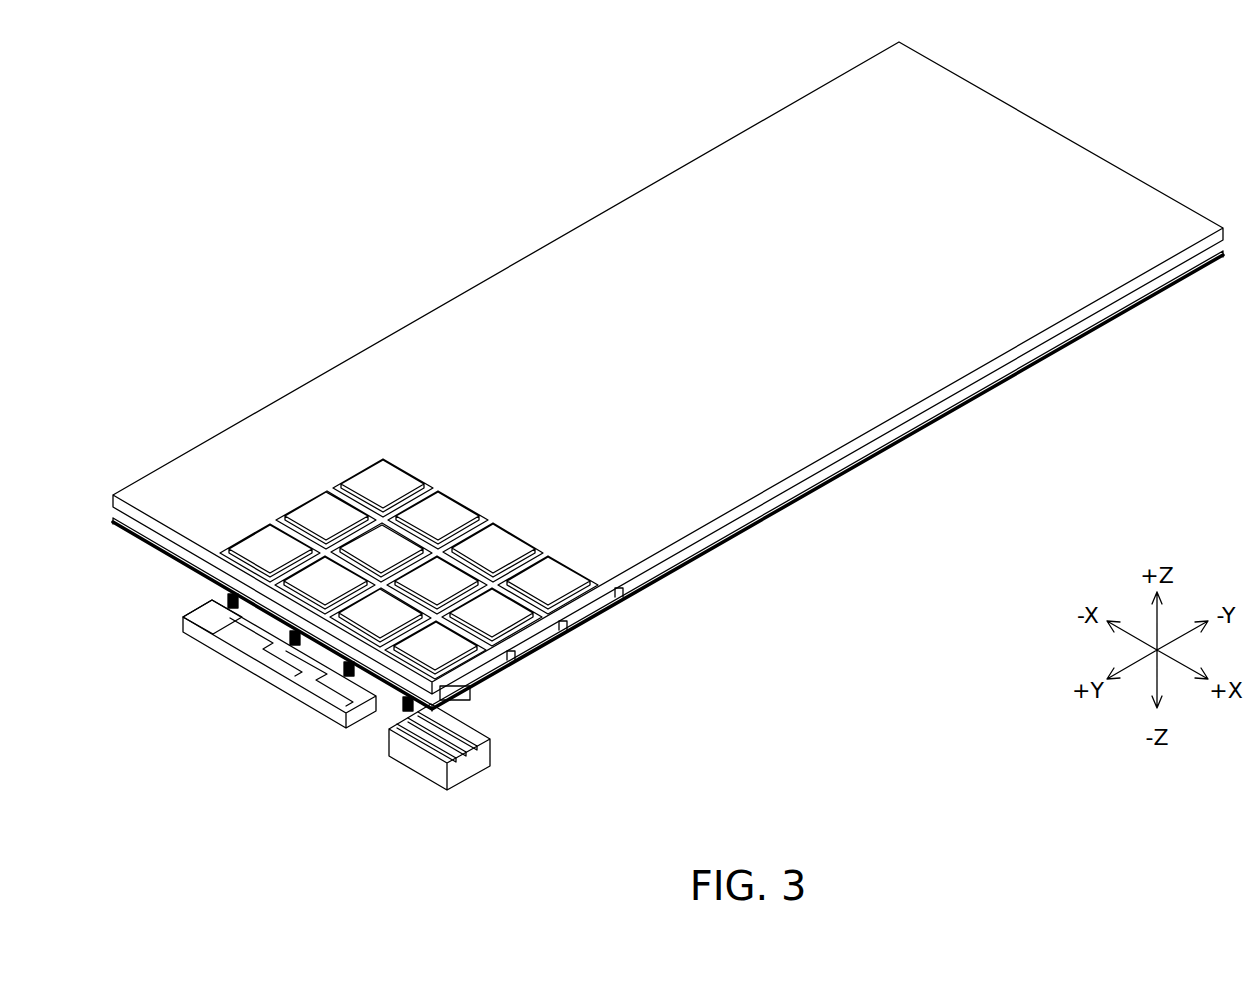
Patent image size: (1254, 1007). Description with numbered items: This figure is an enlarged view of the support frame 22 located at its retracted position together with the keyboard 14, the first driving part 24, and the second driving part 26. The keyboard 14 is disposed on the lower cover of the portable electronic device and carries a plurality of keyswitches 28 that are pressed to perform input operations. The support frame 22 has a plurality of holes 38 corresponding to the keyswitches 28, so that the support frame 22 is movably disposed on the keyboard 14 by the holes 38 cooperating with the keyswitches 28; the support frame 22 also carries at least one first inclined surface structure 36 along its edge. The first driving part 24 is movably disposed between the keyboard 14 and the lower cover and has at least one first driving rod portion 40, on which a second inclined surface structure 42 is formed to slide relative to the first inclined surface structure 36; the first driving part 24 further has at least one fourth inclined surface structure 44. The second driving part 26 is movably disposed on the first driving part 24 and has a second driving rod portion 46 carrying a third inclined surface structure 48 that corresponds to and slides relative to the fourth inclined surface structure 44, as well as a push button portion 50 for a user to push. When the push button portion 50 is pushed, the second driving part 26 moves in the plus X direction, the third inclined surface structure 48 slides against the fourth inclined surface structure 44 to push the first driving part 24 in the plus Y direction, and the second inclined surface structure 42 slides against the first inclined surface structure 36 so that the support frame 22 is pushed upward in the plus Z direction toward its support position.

The keyboard 14 is at (895, 462).
The support frame 22 is at (611, 185).
The first driving part 24 is at (228, 711).
The second driving part 26 is at (453, 794).
The keyswitches 28 is at (387, 526).
The first inclined surface structure 36 is at (515, 648).
The holes 38 is at (425, 462).
The first driving rod portion 40 is at (458, 692).
The second inclined surface structure 42 is at (545, 627).
The fourth inclined surface structure 44 is at (355, 710).
The second driving rod portion 46 is at (215, 608).
The third inclined surface structure 48 is at (320, 690).
The push button portion 50 is at (478, 773).